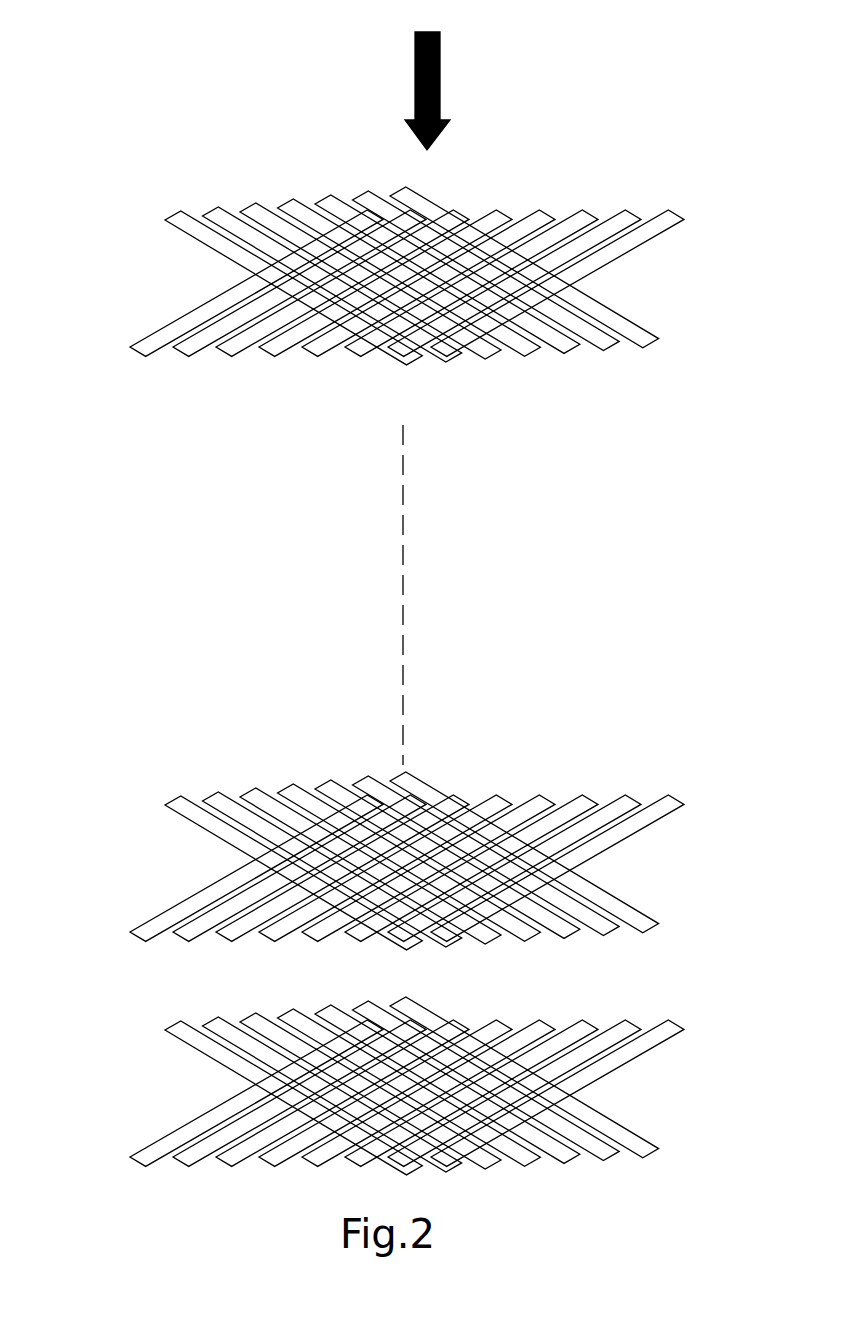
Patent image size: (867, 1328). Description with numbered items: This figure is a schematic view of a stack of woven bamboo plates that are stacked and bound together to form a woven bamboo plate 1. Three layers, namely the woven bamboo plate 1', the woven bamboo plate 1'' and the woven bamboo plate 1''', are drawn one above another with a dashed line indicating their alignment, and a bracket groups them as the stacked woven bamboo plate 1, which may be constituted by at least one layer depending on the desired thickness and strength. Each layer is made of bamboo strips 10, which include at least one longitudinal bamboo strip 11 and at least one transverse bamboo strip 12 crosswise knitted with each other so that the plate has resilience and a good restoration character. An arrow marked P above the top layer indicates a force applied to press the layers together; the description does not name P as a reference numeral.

The woven bamboo plate in a stack 1 is at (417, 617).
The woven bamboo plate 1' is at (416, 212).
The woven bamboo plate 1'' is at (396, 805).
The woven bamboo plate 1''' is at (362, 1076).
The bamboo strip 10 is at (622, 328).
The longitudinal bamboo strip 11 is at (163, 203).
The transverse bamboo strip 12 is at (447, 207).
The pressing force P is at (427, 75).